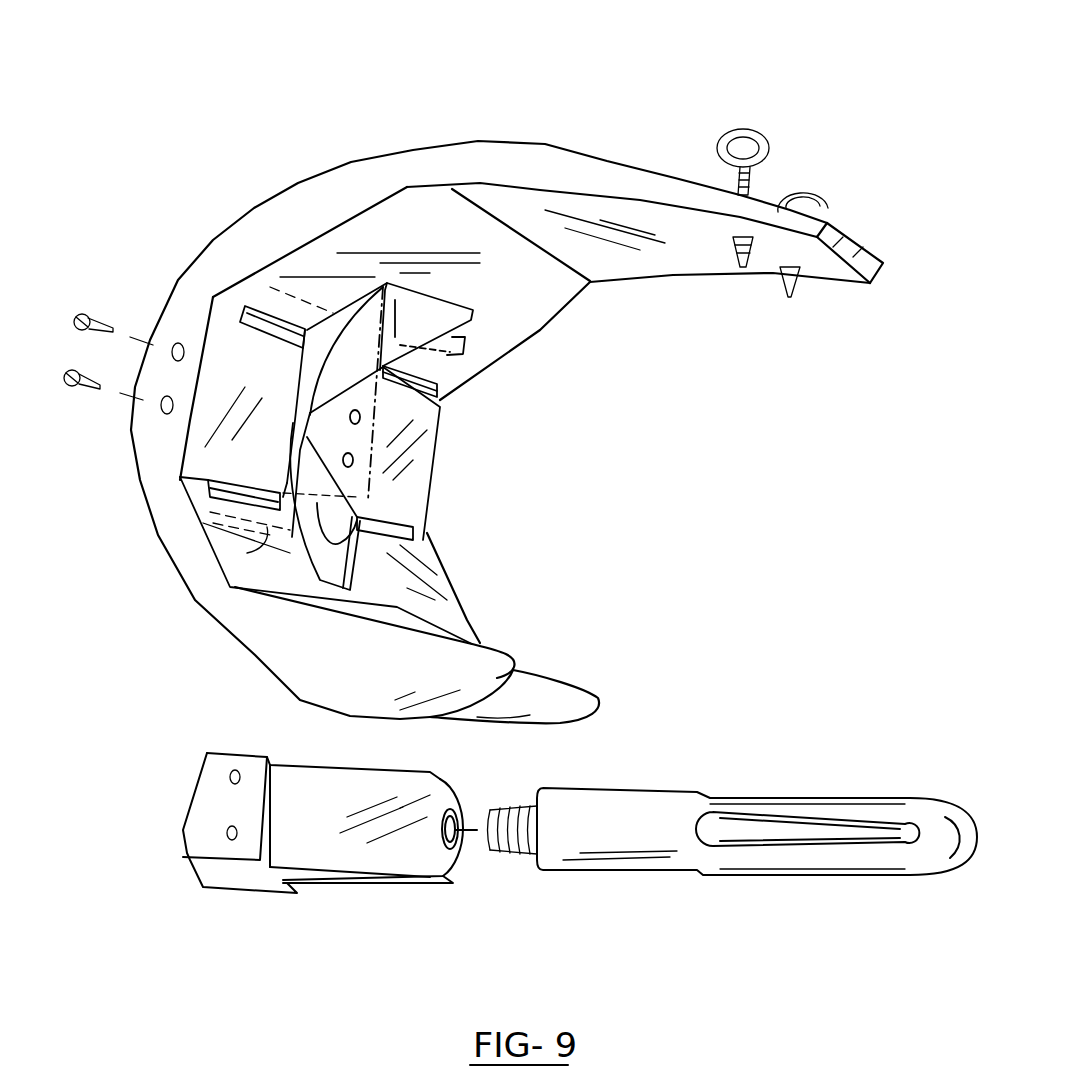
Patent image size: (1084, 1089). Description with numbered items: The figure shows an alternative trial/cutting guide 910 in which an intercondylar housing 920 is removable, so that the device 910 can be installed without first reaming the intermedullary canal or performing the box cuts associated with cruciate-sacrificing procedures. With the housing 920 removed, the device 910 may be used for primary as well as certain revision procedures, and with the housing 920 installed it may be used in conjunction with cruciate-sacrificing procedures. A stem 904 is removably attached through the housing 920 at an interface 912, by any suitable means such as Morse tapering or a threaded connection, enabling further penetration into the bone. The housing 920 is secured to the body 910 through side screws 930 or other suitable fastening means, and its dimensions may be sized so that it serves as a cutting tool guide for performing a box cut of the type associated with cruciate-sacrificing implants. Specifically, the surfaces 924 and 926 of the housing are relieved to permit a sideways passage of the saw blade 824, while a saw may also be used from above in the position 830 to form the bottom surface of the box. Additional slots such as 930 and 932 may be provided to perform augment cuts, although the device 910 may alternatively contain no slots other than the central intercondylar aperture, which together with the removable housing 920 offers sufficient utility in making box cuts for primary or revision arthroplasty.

The trial/cutting guide 910 is at (352, 138).
The side screws 930 is at (277, 290).
The saw position 830 is at (465, 337).
The saw blade 824 is at (415, 548).
The slot 932 is at (265, 531).
The intercondylar housing 920 is at (387, 878).
The surface of the housing 924 is at (320, 798).
The surface of the housing 926 is at (347, 885).
The interface 912 is at (492, 893).
The stem 904 is at (685, 860).